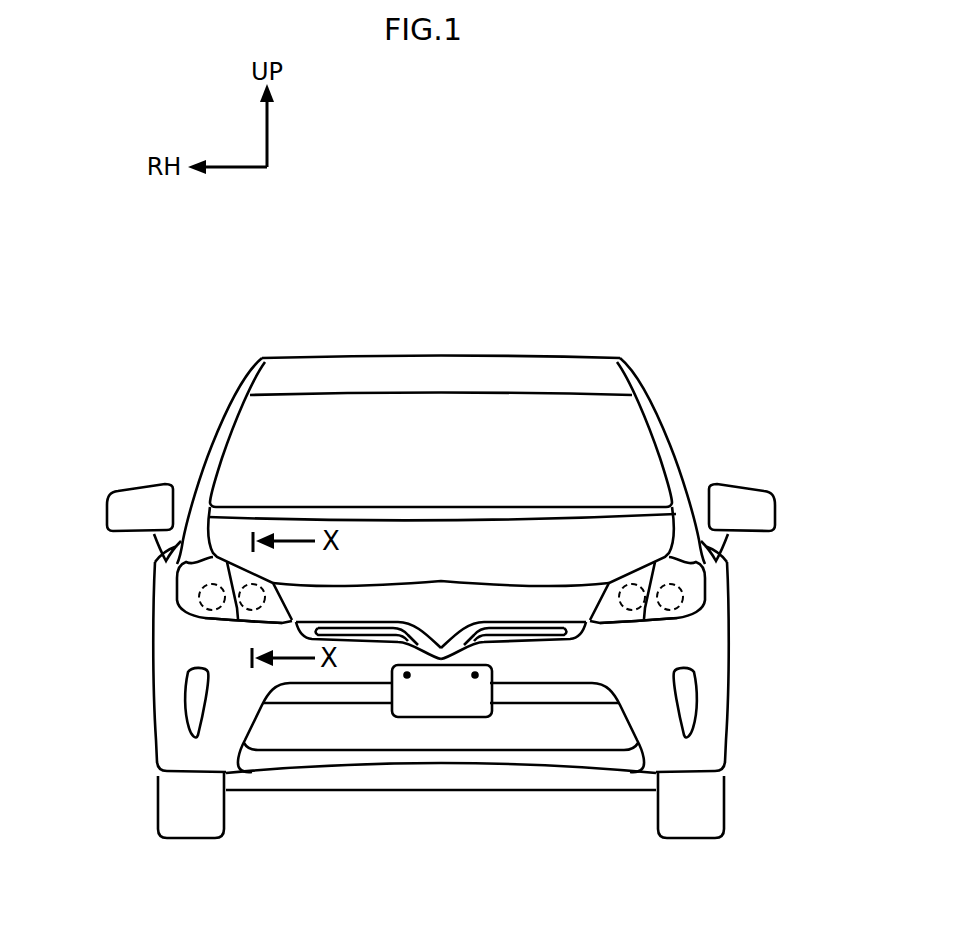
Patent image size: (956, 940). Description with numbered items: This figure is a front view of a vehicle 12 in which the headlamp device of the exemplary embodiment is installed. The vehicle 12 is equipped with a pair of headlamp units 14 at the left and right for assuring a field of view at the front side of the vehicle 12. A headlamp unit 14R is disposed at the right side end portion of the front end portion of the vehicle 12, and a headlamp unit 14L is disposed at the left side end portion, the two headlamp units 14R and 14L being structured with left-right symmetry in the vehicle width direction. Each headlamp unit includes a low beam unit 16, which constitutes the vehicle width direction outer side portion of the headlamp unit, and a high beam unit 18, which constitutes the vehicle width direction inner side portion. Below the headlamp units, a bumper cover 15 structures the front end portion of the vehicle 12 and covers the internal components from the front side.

The vehicle 12 is at (679, 344).
The headlamp units 14 is at (442, 536).
The headlamp unit 14R is at (170, 581).
The headlamp unit 14L is at (713, 581).
The bumper cover 15 is at (567, 667).
The low beam unit 16 is at (197, 619).
The high beam unit 18 is at (246, 630).